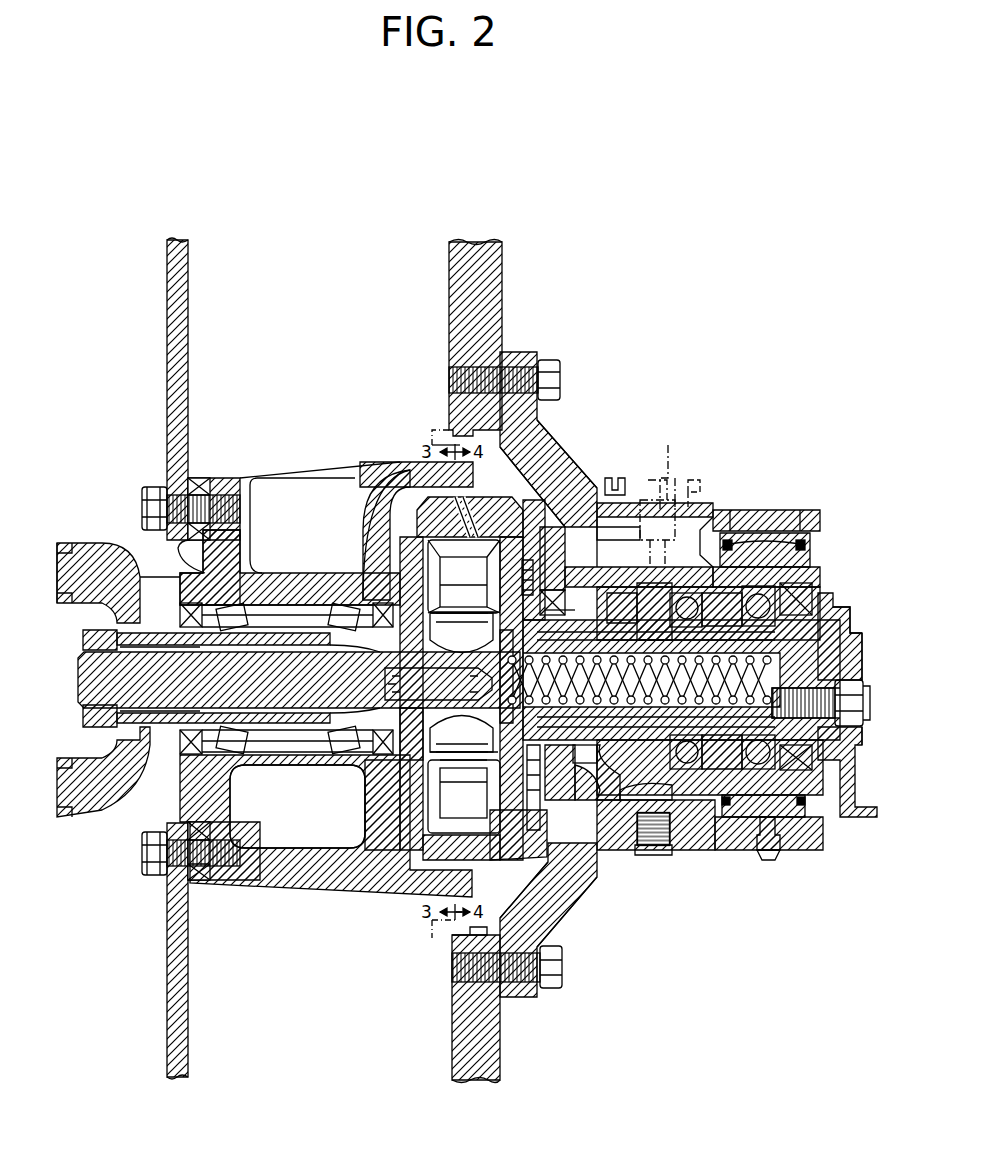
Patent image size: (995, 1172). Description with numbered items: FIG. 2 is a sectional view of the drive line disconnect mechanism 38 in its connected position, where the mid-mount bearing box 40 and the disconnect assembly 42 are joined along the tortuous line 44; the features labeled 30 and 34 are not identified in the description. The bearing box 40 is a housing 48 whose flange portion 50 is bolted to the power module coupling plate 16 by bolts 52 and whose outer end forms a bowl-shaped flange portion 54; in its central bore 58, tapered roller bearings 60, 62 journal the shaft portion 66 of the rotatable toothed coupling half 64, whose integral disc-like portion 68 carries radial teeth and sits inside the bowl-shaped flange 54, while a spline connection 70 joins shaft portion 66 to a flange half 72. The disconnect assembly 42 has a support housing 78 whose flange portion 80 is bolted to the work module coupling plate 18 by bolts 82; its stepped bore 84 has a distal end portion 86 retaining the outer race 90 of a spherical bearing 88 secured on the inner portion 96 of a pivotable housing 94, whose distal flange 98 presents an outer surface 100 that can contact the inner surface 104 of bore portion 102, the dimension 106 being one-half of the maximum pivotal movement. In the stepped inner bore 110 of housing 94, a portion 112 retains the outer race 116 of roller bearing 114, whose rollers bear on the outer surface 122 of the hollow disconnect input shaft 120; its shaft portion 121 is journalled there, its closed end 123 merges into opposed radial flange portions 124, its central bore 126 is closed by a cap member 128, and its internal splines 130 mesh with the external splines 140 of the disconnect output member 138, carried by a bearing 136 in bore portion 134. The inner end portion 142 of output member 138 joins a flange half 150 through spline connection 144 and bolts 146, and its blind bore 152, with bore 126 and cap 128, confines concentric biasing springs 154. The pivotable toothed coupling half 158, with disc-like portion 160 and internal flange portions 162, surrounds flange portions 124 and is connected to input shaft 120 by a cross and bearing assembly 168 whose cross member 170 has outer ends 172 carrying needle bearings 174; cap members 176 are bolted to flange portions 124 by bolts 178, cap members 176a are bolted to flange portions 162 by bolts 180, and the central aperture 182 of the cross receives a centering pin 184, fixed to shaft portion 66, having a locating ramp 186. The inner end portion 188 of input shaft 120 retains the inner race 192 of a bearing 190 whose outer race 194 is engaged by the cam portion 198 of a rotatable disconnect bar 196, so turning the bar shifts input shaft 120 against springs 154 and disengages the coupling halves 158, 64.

The power module coupling plate 16 is at (178, 297).
The work module coupling plate 18 is at (503, 266).
The fillet junction 30 is at (180, 542).
The spacer 34 is at (455, 935).
The drive line disconnect mechanism 38 is at (466, 211).
The mid-mount bearing box 40 is at (280, 434).
The disconnect assembly 42 is at (700, 934).
The tortuous line 44 is at (436, 430).
The housing 48 is at (282, 573).
The flange portion 50 is at (222, 478).
The bolts 52 is at (150, 488).
The bowl-shaped flange portion 54 is at (400, 468).
The central longitudinal bore 58 is at (300, 604).
The tapered roller bearing 60 is at (250, 590).
The tapered roller bearing 62 is at (332, 752).
The rotatable toothed coupling half 64 is at (278, 679).
The shaft portion 66 is at (278, 748).
The disc-like portion 68 is at (400, 500).
The spline connection 70 is at (192, 735).
The flange half 72 is at (84, 542).
The support housing 78 is at (716, 508).
The flange portion 80 is at (540, 935).
The bolts 82 is at (552, 362).
The stepped longitudinal bore 84 is at (648, 848).
The inner or distal end portion 86 is at (734, 830).
The spherical bearing 88 is at (820, 828).
The outer race portion 90 is at (780, 850).
The pivotable housing 94 is at (672, 500).
The inner portion 96 is at (842, 780).
The radial or distal flange 98 is at (608, 486).
The peripheral outer surface 100 is at (560, 860).
The stepped bore portion 102 is at (565, 490).
The inner peripheral surface 104 is at (600, 503).
The one-half of maximum pivotal movement 106 is at (565, 525).
The stepped longitudinal inner bore 110 is at (760, 525).
The bore portion 112 is at (574, 770).
The roller bearing 114 is at (580, 798).
The outer race 116 is at (587, 754).
The disconnect input hollow shaft 120 is at (604, 590).
The input member shaft portion 121 is at (645, 592).
The outer peripheral surface 122 is at (620, 770).
The outer or closed end 123 is at (520, 676).
The opposed radial flange portions 124 is at (536, 490).
The central bore 126 is at (464, 767).
The cap member 128 is at (461, 734).
The splines 130 is at (570, 579).
The bore portion 134 is at (800, 520).
The bearing 136 is at (808, 560).
The disconnect output shaft 138 is at (732, 614).
The external splines 140 is at (864, 703).
The inner end portion 142 is at (850, 642).
The spline connection 144 is at (805, 600).
The bolts 146 is at (868, 720).
The flange half 150 is at (835, 612).
The blind bore portion 152 is at (862, 672).
The concentric biasing springs 154 is at (760, 640).
The pivotable toothed coupling half 158 is at (518, 481).
The disc-like portion 160 is at (530, 905).
The opposed internal flange portions 162 is at (512, 842).
The cross and bearing assembly 168 is at (420, 725).
The cross member 170 is at (412, 615).
The outer ends 172 is at (474, 580).
The needle bearings 174 is at (464, 598).
The cap members 176 is at (395, 532).
The cap members 176a is at (400, 800).
The bolts 178 is at (545, 545).
The bolts 180 is at (531, 800).
The central aperture 182 is at (461, 633).
The locating or centering pin 184 is at (400, 680).
The locating ramp 186 is at (438, 684).
The inner end portion 188 is at (678, 752).
The bearing 190 is at (692, 762).
The inner race 192 is at (688, 745).
The outer race 194 is at (722, 540).
The rotatable disconnect bar 196 is at (668, 445).
The cam portion 198 is at (686, 482).